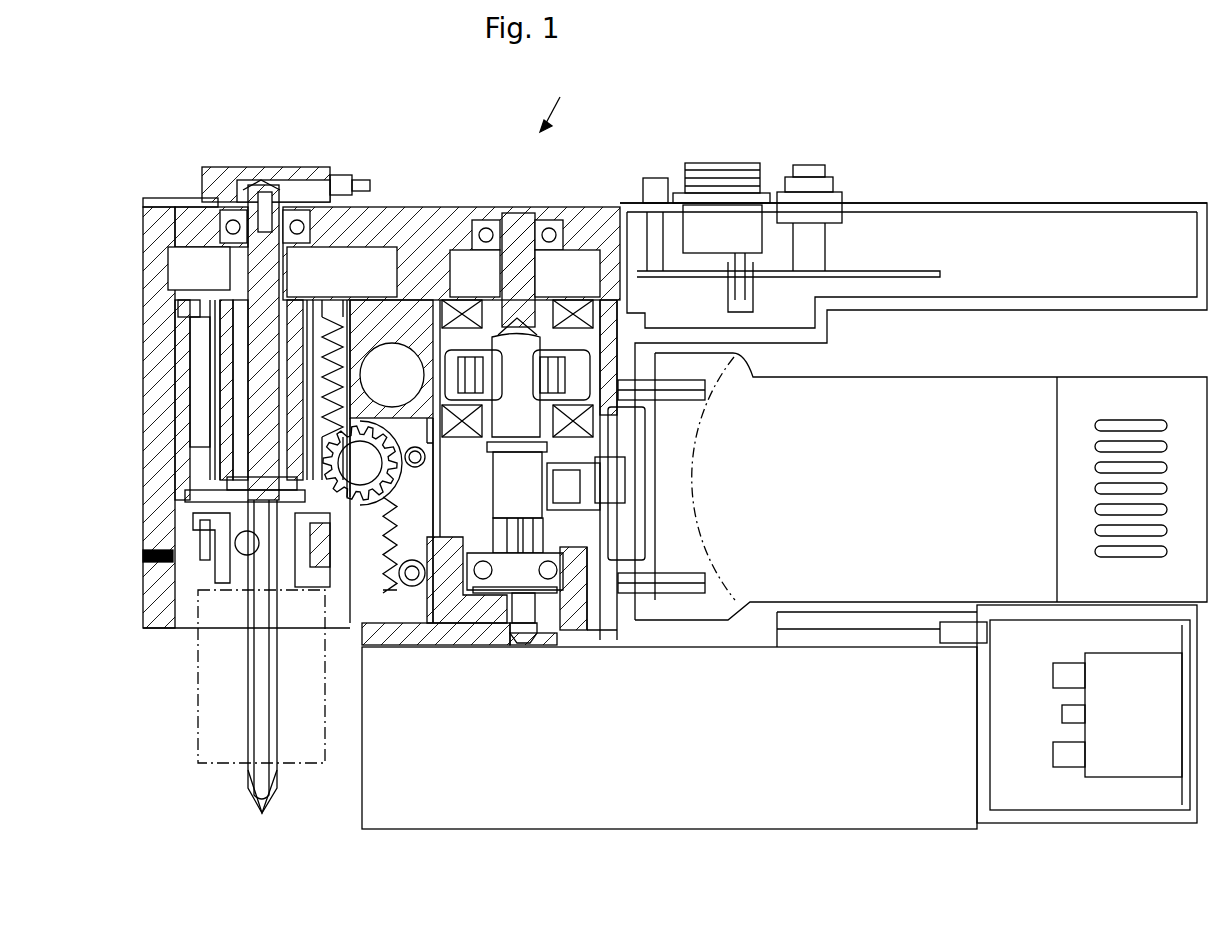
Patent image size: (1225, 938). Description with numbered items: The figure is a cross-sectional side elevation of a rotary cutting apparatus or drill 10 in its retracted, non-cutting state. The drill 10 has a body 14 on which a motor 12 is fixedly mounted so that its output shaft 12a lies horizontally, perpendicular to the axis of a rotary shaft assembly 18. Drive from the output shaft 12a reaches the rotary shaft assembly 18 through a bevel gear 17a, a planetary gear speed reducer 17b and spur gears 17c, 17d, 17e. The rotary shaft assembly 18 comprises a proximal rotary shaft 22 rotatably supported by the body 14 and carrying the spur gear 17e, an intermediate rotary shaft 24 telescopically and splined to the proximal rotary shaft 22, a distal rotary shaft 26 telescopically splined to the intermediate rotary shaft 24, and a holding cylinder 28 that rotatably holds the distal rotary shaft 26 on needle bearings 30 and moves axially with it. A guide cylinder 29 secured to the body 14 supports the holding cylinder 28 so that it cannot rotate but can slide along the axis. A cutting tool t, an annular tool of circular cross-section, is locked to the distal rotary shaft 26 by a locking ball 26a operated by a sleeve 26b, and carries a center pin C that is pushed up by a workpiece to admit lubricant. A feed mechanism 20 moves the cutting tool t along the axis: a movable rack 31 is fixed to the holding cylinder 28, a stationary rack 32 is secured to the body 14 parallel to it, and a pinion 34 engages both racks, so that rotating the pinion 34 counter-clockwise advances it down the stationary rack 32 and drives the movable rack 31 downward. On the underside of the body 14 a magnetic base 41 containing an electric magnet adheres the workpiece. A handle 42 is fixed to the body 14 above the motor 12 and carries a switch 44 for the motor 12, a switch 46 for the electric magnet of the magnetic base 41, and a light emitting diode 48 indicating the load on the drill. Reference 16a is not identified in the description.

The rotary cutting apparatus 10 is at (554, 98).
The motor 12 is at (1000, 375).
The output shaft 12a is at (582, 497).
The body 14 is at (500, 202).
The housing wall 16a is at (180, 630).
The bevel gear 17a is at (565, 525).
The planetary gear speed reducer 17b is at (475, 470).
The spur gear 17c is at (570, 268).
The spur gear 17d is at (455, 268).
The spur gear 17e is at (192, 265).
The rotary shaft assembly 18 is at (342, 196).
The feed mechanism 20 is at (362, 587).
The proximal rotary shaft 22 is at (250, 422).
The intermediate rotary shaft 24 is at (213, 405).
The distal rotary shaft 26 is at (227, 323).
The locking ball 26a is at (190, 572).
The sleeve 26b is at (192, 536).
The holding cylinder 28 is at (195, 380).
The guide cylinder 29 is at (183, 358).
The needle bearings 30 is at (215, 350).
The movable rack 31 is at (333, 300).
The stationary rack 32 is at (300, 495).
The pinion 34 is at (208, 461).
The magnetic base 41 is at (669, 738).
The handle 42 is at (985, 203).
The switch 44 is at (812, 165).
The switch 46 is at (740, 163).
The light emitting diode 48 is at (655, 176).
The cutting tool t is at (200, 690).
The center pin C is at (243, 785).